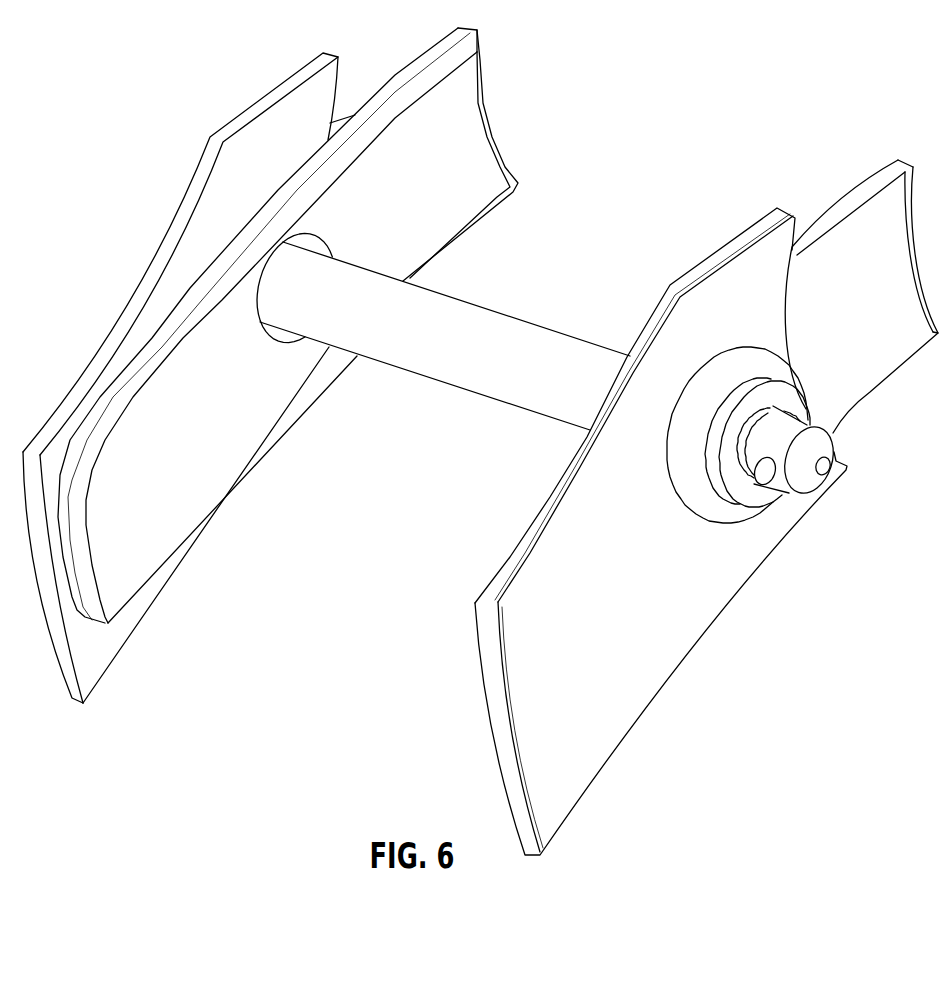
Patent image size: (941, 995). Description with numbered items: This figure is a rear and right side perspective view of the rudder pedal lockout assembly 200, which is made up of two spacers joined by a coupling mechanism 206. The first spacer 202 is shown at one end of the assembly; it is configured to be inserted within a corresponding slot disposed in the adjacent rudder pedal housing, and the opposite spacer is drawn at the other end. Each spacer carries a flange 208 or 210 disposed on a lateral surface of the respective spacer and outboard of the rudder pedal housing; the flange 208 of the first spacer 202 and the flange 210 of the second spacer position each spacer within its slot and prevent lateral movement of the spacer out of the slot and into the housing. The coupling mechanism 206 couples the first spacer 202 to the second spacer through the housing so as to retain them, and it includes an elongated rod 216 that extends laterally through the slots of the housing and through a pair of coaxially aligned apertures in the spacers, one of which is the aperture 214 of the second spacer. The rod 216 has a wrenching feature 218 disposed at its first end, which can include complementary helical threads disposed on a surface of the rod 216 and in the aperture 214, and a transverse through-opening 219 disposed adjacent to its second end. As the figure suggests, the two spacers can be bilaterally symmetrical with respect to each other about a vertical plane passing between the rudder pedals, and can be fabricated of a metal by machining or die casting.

The rudder pedal lockout assembly 200 is at (755, 113).
The first spacer 202 is at (215, 447).
The coupling mechanism 206 is at (563, 262).
The flange 208 is at (170, 560).
The flange 210 is at (683, 638).
The aperture 214 is at (882, 347).
The elongated rod 216 is at (460, 377).
The wrenching feature 218 is at (765, 495).
The transverse through-opening 219 is at (756, 470).